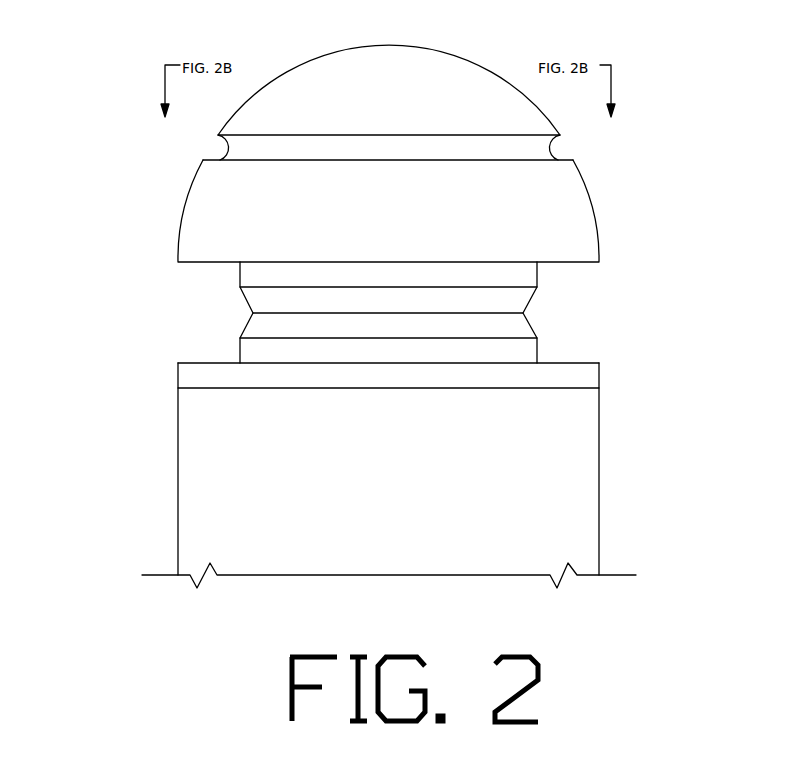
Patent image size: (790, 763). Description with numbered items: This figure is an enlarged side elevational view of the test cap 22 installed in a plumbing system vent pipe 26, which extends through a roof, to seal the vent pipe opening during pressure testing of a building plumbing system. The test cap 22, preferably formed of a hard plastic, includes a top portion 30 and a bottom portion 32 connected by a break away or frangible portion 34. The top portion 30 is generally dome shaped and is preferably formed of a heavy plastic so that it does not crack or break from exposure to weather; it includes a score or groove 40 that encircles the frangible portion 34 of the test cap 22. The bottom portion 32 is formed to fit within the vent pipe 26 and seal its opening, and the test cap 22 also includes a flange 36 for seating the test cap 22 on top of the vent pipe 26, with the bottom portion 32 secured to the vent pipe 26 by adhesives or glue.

The test cap 22 is at (115, 65).
The plumbing system vent pipe 26 is at (600, 467).
The top portion 30 is at (438, 33).
The bottom portion 32 is at (612, 368).
The frangible portion 34 is at (192, 318).
The flange 36 is at (195, 362).
The groove 40 is at (553, 144).